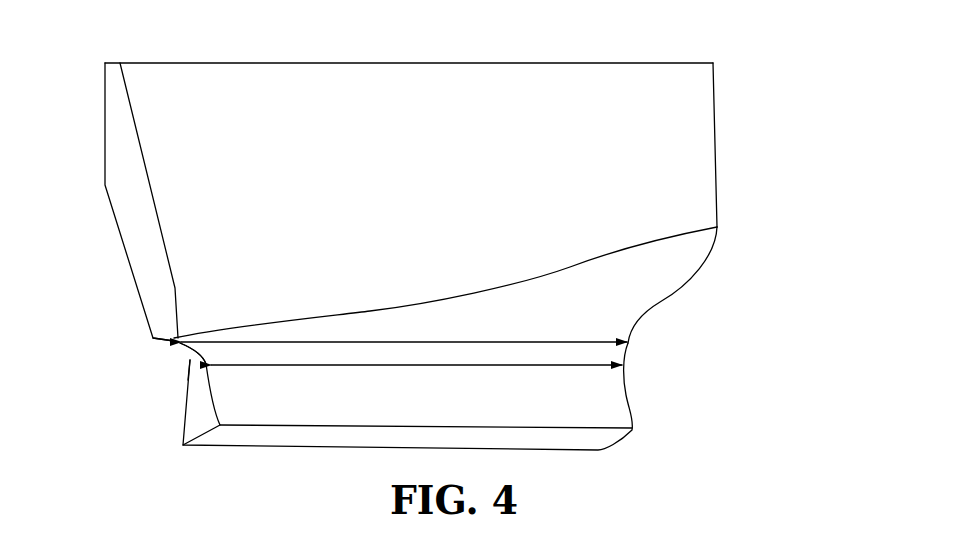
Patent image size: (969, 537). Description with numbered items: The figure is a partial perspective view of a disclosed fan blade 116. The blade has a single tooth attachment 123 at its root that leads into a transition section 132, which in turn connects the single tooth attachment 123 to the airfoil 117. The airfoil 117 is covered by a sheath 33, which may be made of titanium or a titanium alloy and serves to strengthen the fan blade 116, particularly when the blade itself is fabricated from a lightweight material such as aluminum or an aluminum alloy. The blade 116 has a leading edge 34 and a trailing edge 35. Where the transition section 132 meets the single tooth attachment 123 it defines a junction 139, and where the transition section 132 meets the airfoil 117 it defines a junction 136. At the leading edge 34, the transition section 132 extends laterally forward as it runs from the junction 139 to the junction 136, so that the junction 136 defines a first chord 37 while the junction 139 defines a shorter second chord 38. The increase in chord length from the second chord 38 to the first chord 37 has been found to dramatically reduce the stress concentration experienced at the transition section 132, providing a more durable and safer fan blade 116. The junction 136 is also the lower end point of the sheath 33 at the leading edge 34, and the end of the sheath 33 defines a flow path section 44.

The sheath 33 is at (328, 130).
The leading edge 34 is at (132, 270).
The trailing edge 35 is at (717, 195).
The first chord 37 is at (436, 342).
The second chord 38 is at (403, 366).
The flow path section 44 is at (602, 255).
The fan blade 116 is at (736, 102).
The airfoil 117 is at (683, 283).
The single tooth attachment 123 is at (630, 407).
The transition section 132 is at (187, 355).
The junction 136 is at (172, 341).
The junction 139 is at (188, 363).